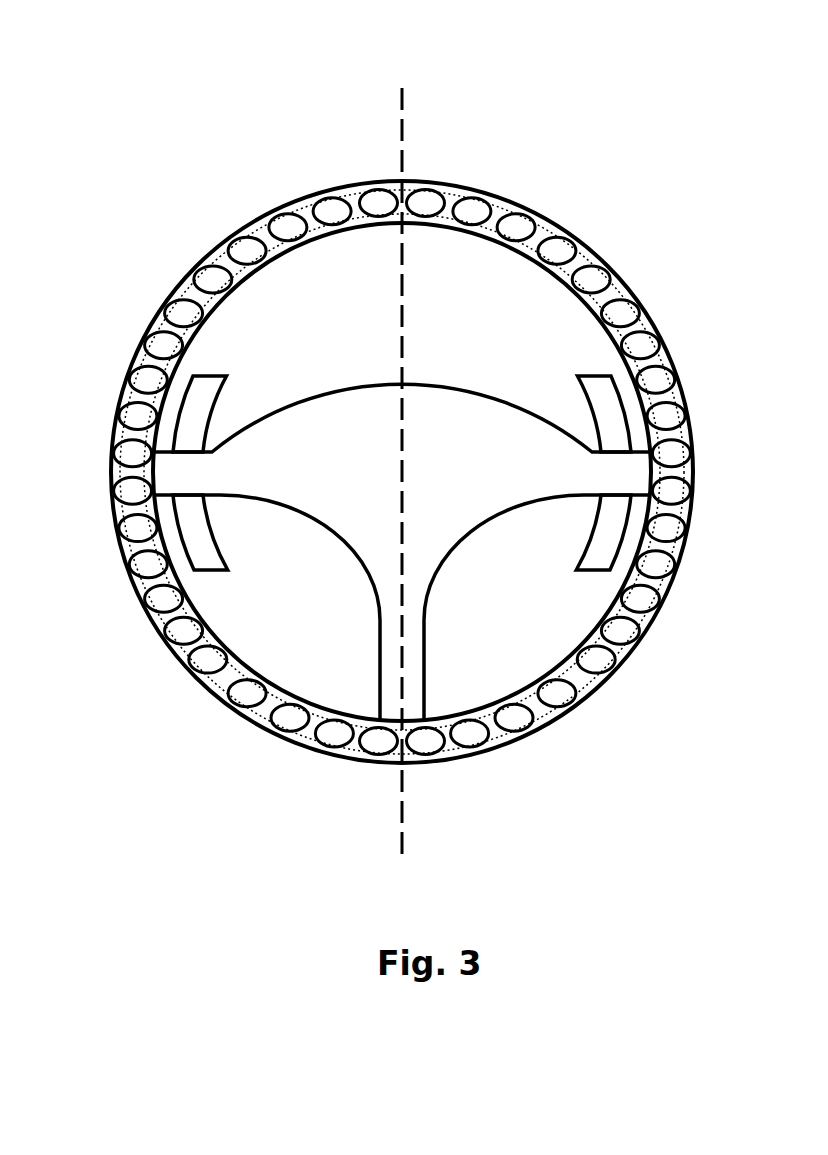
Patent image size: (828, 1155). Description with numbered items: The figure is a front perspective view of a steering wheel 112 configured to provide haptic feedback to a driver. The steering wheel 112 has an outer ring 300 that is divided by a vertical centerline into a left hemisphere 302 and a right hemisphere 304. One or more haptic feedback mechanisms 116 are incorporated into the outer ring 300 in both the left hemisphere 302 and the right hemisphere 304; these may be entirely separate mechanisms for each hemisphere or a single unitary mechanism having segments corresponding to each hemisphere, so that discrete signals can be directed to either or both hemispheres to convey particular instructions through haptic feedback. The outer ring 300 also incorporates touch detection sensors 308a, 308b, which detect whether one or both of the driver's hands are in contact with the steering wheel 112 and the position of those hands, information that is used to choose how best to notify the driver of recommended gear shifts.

The steering wheel 112 is at (137, 78).
The haptic feedback mechanism 116 is at (133, 579).
The outer ring 300 is at (232, 236).
The left hemisphere 302 is at (342, 171).
The right hemisphere 304 is at (469, 171).
The touch detection sensor 308a is at (130, 386).
The touch detection sensor 308b is at (146, 344).